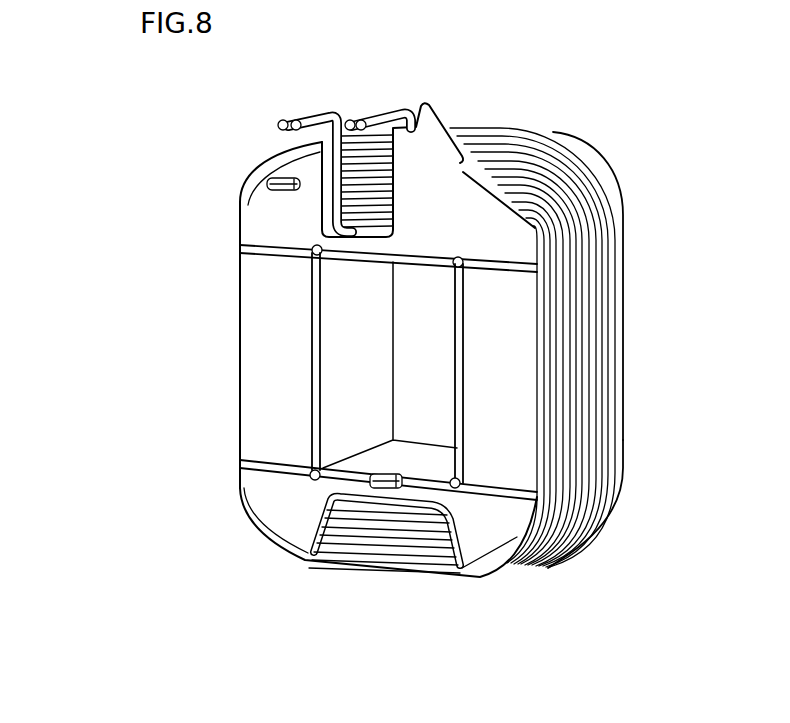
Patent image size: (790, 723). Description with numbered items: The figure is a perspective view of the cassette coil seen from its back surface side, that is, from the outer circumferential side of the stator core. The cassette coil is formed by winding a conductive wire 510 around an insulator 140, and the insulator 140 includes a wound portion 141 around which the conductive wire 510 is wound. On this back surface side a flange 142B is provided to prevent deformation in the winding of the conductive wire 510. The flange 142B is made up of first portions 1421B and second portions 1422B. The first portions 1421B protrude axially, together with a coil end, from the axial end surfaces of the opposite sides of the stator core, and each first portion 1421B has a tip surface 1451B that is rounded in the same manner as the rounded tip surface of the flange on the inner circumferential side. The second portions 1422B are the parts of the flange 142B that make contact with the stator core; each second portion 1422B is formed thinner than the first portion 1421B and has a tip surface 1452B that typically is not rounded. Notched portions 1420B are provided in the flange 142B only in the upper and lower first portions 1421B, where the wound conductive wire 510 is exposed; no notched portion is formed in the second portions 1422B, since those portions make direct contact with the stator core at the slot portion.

The insulator 140 is at (238, 199).
The notched portion 1420B is at (369, 200).
The tip surface 1452B is at (237, 277).
The second portion 1422B is at (262, 357).
The flange 142B is at (292, 376).
The first portion 1421B is at (273, 498).
The tip surface 1451B is at (273, 540).
The conductive wire 510 is at (580, 373).
The wound portion 141 is at (601, 549).